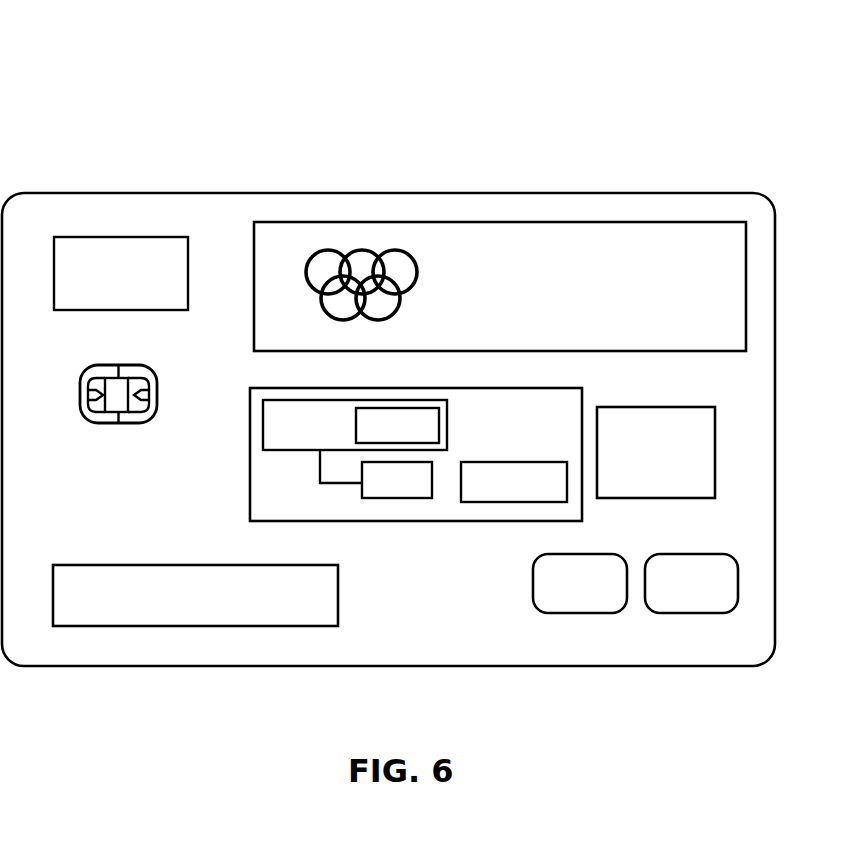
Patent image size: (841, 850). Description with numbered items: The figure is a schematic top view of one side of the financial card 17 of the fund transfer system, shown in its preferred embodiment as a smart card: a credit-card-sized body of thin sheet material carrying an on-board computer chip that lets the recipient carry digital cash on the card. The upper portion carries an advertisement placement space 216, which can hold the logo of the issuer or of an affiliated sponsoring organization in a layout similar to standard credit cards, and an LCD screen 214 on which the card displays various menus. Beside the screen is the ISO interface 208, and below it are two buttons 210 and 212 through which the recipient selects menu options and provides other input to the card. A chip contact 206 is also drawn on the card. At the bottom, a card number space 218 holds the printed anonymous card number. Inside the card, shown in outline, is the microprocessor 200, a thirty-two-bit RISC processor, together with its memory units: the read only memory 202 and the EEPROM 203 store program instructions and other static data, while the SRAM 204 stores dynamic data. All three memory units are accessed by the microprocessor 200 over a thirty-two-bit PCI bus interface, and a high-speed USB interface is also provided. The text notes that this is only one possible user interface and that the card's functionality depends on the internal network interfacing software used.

The financial card 17 is at (98, 69).
The advertisement placement space 216 is at (118, 240).
The LCD screen 214 is at (500, 286).
The smart card chip contacts 206 is at (71, 404).
The microprocessor 200 is at (387, 440).
The random access memory (SRAM) 204 is at (413, 408).
The read only memory (ROM) 202 is at (393, 488).
The EEPROM 203 is at (540, 463).
The ISO 7815 interface 208 is at (656, 452).
The button 210 is at (580, 583).
The button 212 is at (691, 583).
The card number space 218 is at (330, 613).